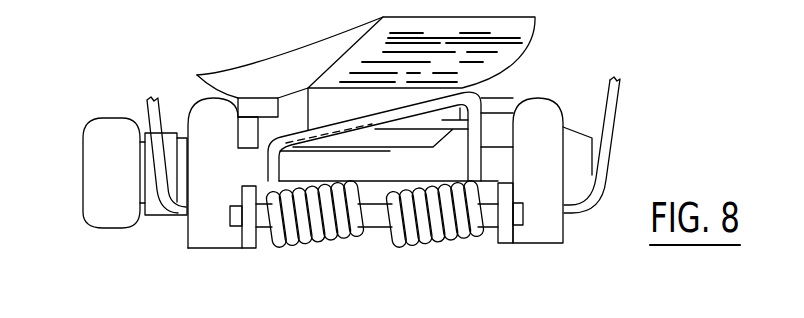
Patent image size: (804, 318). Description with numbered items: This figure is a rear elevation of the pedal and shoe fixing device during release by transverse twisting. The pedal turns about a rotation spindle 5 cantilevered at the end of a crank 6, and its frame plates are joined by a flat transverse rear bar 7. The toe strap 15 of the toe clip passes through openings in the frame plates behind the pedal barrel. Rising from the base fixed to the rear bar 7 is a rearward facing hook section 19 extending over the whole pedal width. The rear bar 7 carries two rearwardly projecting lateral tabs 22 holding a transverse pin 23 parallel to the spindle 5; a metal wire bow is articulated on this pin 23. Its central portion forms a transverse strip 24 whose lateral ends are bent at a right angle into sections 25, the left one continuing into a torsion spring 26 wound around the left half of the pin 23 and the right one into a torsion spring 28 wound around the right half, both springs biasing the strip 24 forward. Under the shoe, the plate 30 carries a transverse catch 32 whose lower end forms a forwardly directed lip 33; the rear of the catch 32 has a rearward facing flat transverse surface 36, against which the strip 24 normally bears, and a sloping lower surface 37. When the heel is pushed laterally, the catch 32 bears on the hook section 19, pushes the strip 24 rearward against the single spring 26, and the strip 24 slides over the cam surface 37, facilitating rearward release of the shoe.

The rotation spindle 5 is at (170, 143).
The crank 6 is at (102, 162).
The rear bar 7 is at (542, 227).
The toe strap 15 is at (147, 110).
The hook section 19 is at (252, 108).
The lateral tabs 22 is at (247, 230).
The transverse pin 23 is at (377, 216).
The transverse strip 24 is at (380, 116).
The bent sections 25 is at (279, 174).
The torsion spring 26 is at (334, 226).
The torsion spring 28 is at (458, 227).
The plate 30 is at (243, 71).
The catch 32 is at (292, 108).
The lip 33 is at (270, 129).
The flat transverse surface 36 is at (462, 115).
The sloping lower surface 37 is at (421, 135).